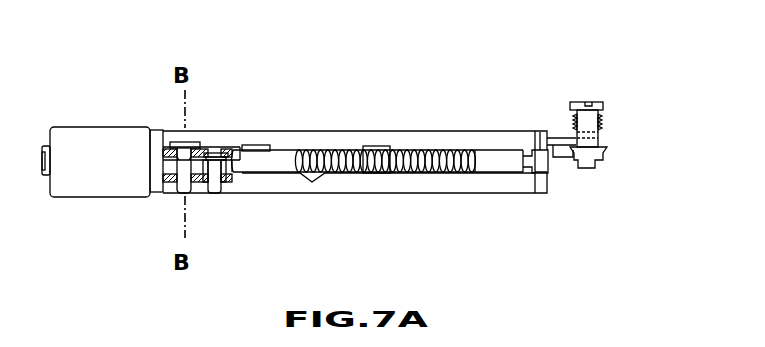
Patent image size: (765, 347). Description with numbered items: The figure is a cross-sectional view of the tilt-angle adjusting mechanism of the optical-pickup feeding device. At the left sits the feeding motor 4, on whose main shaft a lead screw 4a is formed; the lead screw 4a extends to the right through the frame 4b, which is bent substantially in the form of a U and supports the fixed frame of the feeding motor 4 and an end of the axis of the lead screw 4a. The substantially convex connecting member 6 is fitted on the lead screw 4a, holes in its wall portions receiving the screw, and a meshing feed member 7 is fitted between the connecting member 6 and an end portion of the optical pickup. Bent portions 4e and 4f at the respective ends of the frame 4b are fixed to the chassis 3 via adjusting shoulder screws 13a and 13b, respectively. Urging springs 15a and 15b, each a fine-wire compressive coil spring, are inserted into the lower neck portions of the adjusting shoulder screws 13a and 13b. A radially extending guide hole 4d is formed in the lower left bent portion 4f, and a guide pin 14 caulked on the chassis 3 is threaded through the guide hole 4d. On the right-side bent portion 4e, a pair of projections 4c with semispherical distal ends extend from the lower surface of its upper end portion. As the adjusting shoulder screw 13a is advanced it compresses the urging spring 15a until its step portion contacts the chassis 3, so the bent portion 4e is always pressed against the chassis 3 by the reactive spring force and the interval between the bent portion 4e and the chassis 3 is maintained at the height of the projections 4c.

The feeding motor 4 is at (68, 137).
The urging spring 15b is at (162, 157).
The adjusting shoulder screw 13b is at (192, 142).
The guide pin 14 is at (216, 153).
The connecting member 6 is at (378, 146).
The frame 4b is at (439, 140).
The bent portion 4e is at (542, 132).
The adjusting shoulder screw 13a is at (593, 100).
The urging spring 15a is at (600, 118).
The chassis 3 is at (605, 150).
The projections 4c is at (567, 152).
The lead screw 4a is at (407, 174).
The meshing feed member 7 is at (318, 183).
The bent portion 4f is at (173, 183).
The guide hole 4d is at (230, 183).